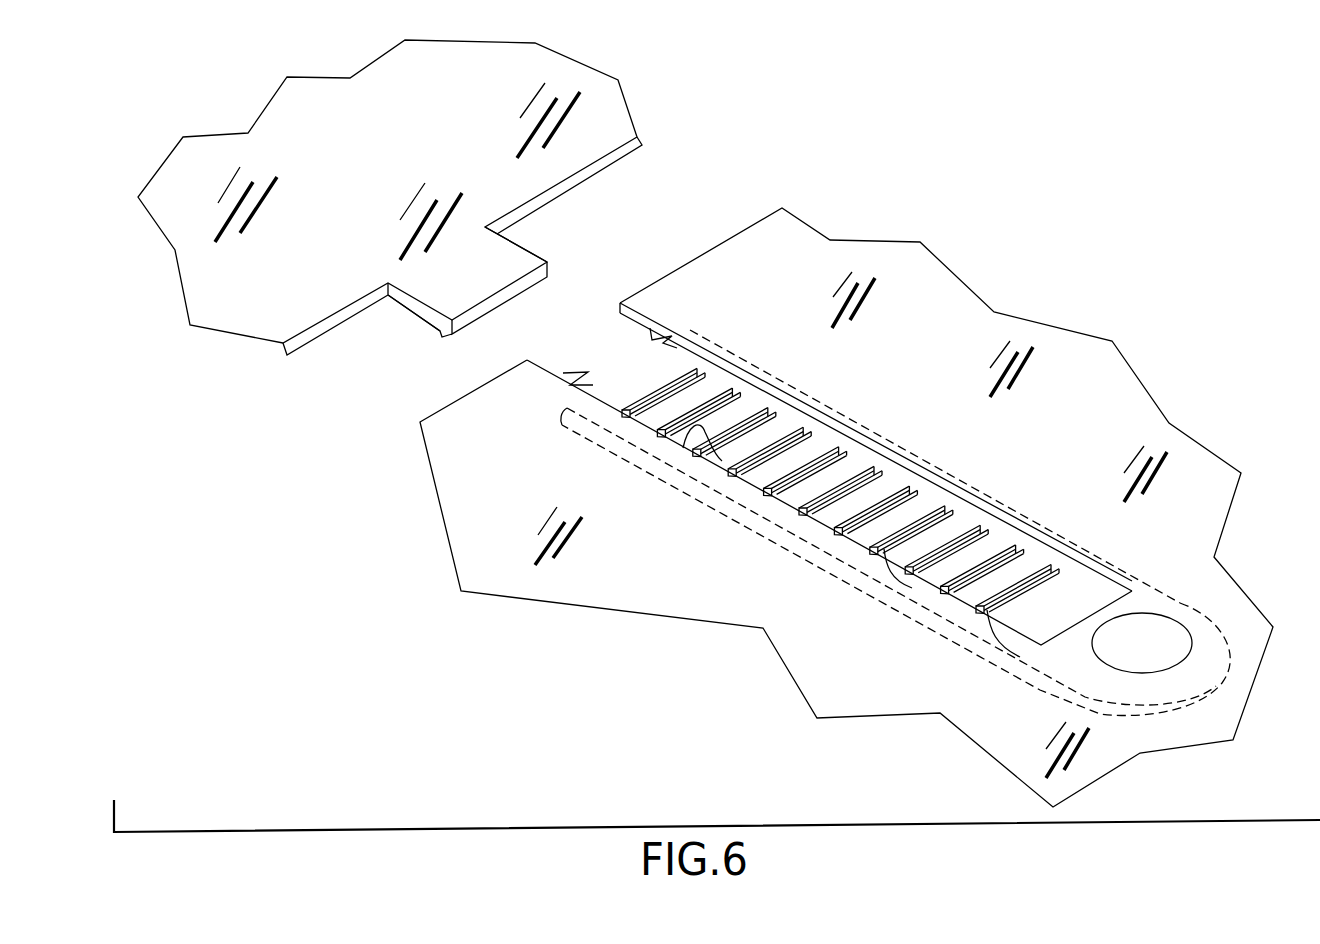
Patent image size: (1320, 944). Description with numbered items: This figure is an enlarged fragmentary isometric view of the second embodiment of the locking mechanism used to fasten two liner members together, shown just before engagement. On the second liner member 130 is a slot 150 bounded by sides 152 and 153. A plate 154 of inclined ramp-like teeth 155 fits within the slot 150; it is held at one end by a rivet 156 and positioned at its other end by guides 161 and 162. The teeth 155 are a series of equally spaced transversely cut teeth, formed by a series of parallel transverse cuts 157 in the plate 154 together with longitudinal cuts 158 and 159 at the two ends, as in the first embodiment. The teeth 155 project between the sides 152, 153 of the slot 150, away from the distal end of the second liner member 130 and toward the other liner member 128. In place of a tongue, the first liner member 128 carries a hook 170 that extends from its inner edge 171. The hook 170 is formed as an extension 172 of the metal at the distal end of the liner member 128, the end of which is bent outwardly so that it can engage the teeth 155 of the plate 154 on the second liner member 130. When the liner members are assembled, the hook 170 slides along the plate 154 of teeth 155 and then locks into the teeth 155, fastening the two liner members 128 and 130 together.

The liner member 128 is at (267, 403).
The second liner member 130 is at (887, 225).
The slot 150 is at (935, 475).
The side of slot 152 is at (803, 412).
The side of slot 153 is at (695, 435).
The plate 154 is at (1028, 682).
The teeth 155 is at (868, 467).
The rivet 156 is at (1178, 617).
The transverse cuts 157 is at (912, 588).
The longitudinal cut 158 is at (663, 432).
The longitudinal cut 159 is at (698, 365).
The guide 161 is at (650, 332).
The guide 162 is at (588, 373).
The hook 170 is at (427, 322).
The inner edge 171 is at (573, 178).
The extension 172 is at (523, 243).